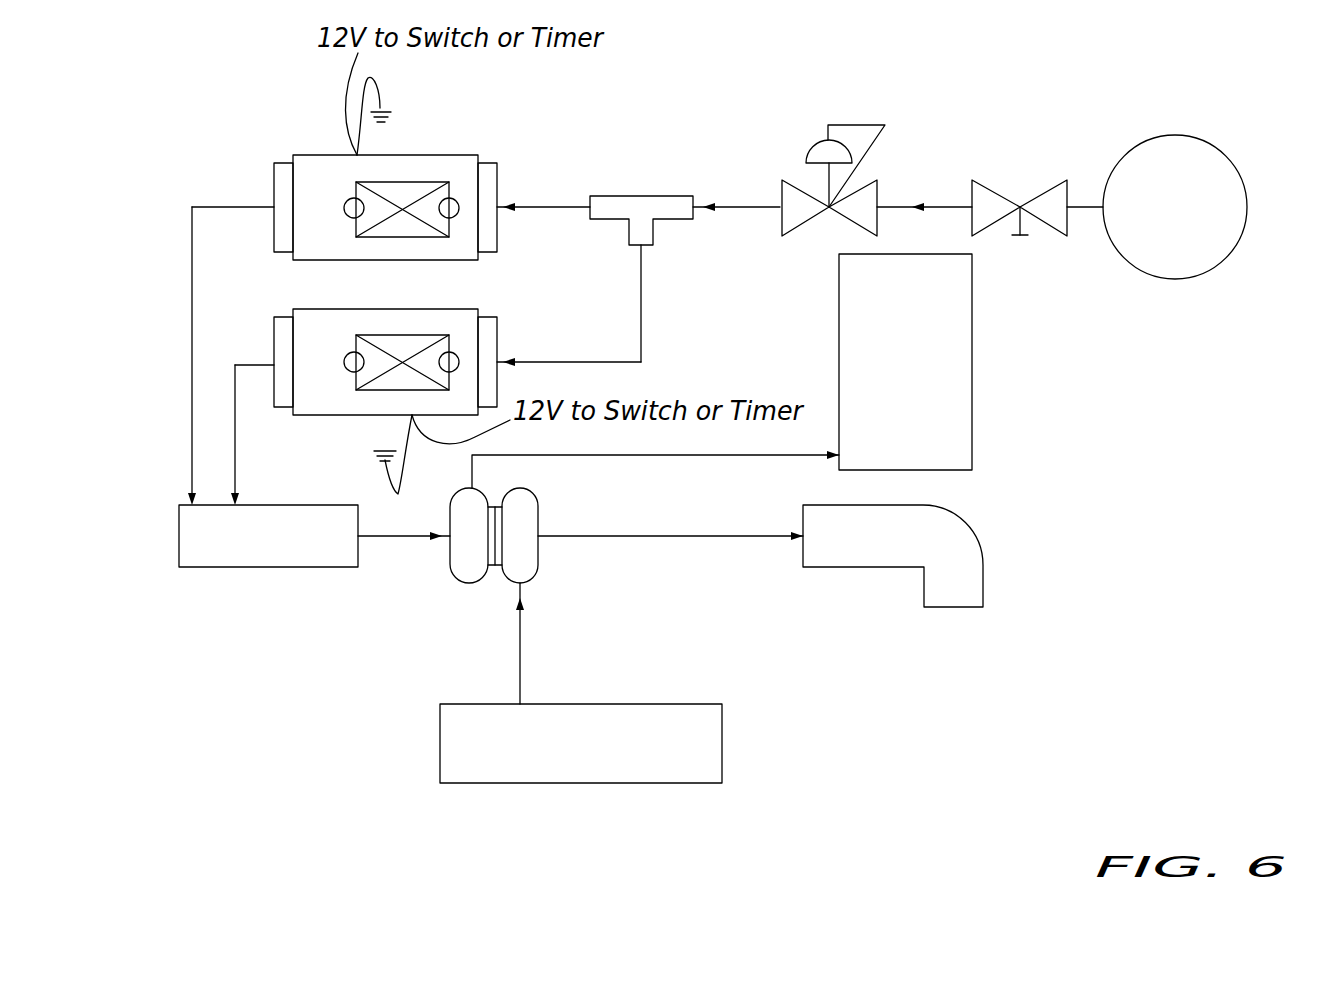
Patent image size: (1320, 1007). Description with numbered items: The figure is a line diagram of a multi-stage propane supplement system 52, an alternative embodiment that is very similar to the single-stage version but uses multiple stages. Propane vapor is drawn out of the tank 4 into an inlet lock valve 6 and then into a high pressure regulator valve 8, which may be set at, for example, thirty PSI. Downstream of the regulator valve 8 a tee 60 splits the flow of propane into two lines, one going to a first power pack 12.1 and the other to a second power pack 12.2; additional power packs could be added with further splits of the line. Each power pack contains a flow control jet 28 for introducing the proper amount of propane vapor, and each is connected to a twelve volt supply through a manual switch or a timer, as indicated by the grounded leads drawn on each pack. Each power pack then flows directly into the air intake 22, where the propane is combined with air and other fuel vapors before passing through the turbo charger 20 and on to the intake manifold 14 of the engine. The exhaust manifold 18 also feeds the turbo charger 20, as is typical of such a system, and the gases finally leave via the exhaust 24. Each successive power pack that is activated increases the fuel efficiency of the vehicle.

The multi-stage propane supplement system 52 is at (118, 122).
The first power pack 12.1 is at (305, 152).
The second power pack 12.2 is at (277, 317).
The flow control jet 28 is at (415, 182).
The tee 60 is at (650, 196).
The high pressure regulator valve 8 is at (782, 178).
The inlet lock valve 6 is at (972, 178).
The tank 4 is at (1120, 157).
The intake manifold 14 is at (905, 363).
The exhaust 24 is at (937, 508).
The air intake 22 is at (268, 537).
The turbo charger 20 is at (470, 585).
The exhaust manifold 18 is at (581, 744).